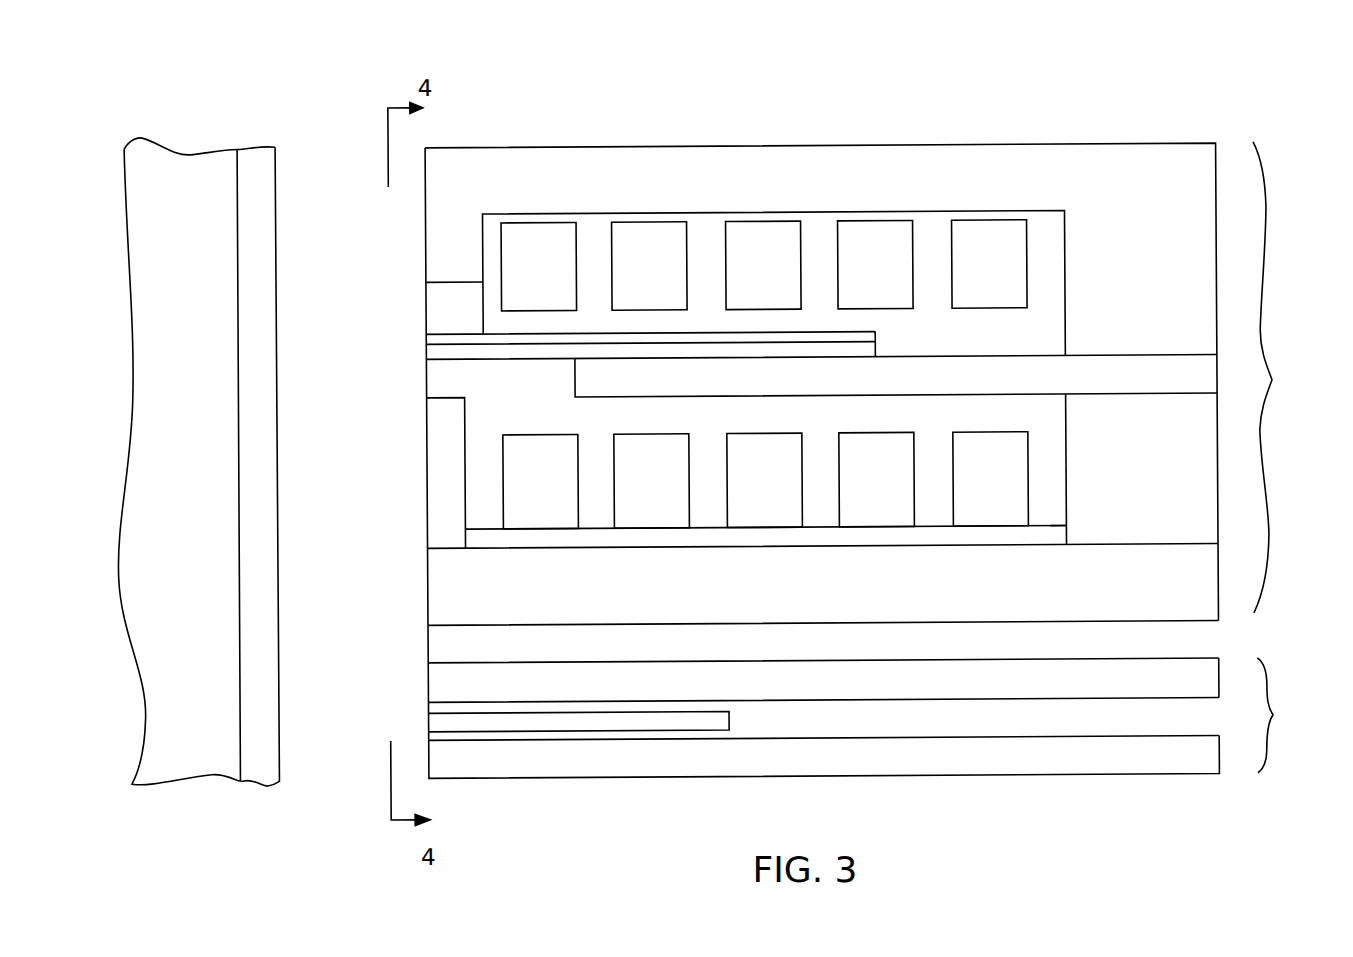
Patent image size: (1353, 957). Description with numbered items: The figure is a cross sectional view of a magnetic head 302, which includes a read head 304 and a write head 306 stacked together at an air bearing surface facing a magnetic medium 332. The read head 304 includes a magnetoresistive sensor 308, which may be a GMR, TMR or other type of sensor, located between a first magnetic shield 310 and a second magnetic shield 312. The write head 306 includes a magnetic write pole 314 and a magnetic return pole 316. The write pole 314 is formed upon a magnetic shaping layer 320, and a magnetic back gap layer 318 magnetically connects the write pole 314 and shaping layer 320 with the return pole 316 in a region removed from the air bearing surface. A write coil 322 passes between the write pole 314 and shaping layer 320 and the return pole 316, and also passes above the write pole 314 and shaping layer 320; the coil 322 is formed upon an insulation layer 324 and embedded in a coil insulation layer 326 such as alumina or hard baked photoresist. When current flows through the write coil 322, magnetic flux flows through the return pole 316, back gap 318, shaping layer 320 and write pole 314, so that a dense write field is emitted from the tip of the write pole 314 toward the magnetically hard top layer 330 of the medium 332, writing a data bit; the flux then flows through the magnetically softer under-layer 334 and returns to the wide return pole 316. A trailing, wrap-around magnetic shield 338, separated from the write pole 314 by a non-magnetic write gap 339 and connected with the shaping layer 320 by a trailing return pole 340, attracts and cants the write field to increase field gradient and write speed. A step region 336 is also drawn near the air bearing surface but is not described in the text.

The magnetic head 302 is at (974, 104).
The read head 304 is at (1271, 676).
The write head 306 is at (1266, 170).
The magnetoresistive sensor 308 is at (710, 722).
The first magnetic shield 310 is at (824, 755).
The second magnetic shield 312 is at (823, 680).
The magnetic write pole 314 is at (431, 345).
The magnetic return pole 316 is at (823, 585).
The magnetic back gap layer 318 is at (1109, 468).
The magnetic shaping layer 320 is at (896, 376).
The write coil 322 is at (764, 374).
The insulation layer 324 is at (943, 340).
The coil insulation layer 326 is at (704, 232).
The magnetically hard top layer 330 is at (267, 165).
The magnetic medium 332 is at (183, 148).
The magnetically softer under-layer 334 is at (198, 467).
The trailing shield step 336 is at (438, 440).
The trailing, wrap-around magnetic shield 338 is at (464, 300).
The non-magnetic write gap 339 is at (441, 336).
The trailing return pole 340 is at (773, 260).